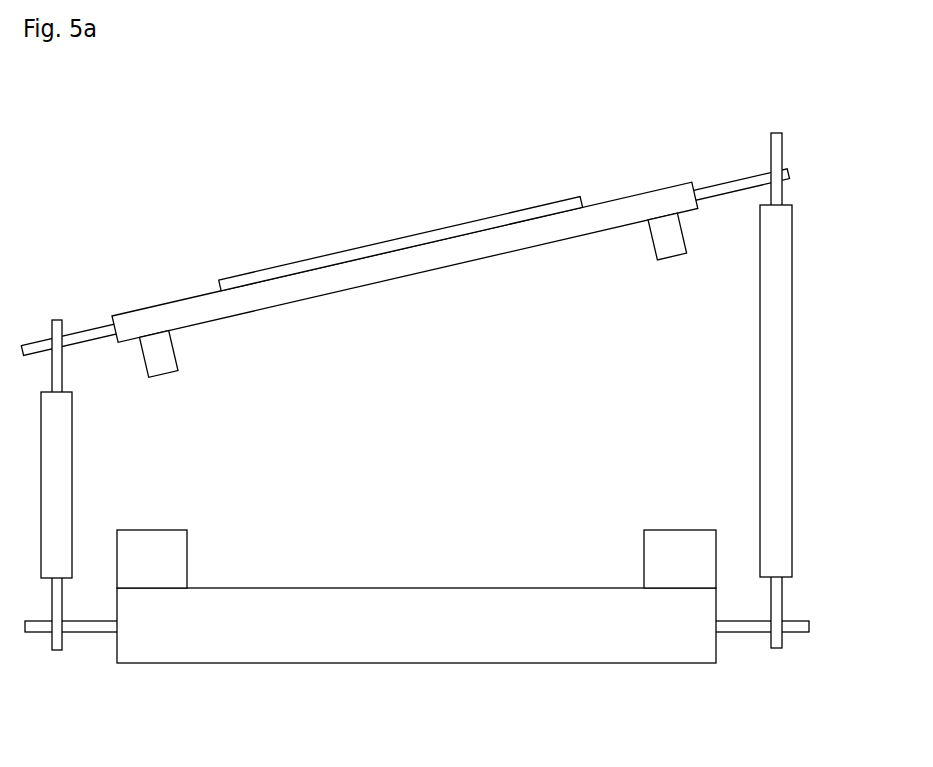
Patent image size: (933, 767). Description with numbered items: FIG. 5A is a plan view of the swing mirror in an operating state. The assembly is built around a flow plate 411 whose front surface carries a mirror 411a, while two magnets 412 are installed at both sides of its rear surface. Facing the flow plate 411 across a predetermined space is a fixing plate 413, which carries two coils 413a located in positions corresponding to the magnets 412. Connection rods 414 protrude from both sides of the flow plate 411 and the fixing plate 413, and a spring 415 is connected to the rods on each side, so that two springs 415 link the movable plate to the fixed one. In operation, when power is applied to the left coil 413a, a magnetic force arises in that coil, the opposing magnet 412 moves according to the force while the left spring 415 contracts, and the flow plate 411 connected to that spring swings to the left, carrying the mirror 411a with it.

The flow plate 411 is at (185, 308).
The mirror 411a is at (355, 252).
The magnet 412 is at (175, 358).
The fixing plate 413 is at (413, 650).
The coil 413a is at (185, 549).
The connection rod 414 is at (732, 183).
The spring 415 is at (785, 405).